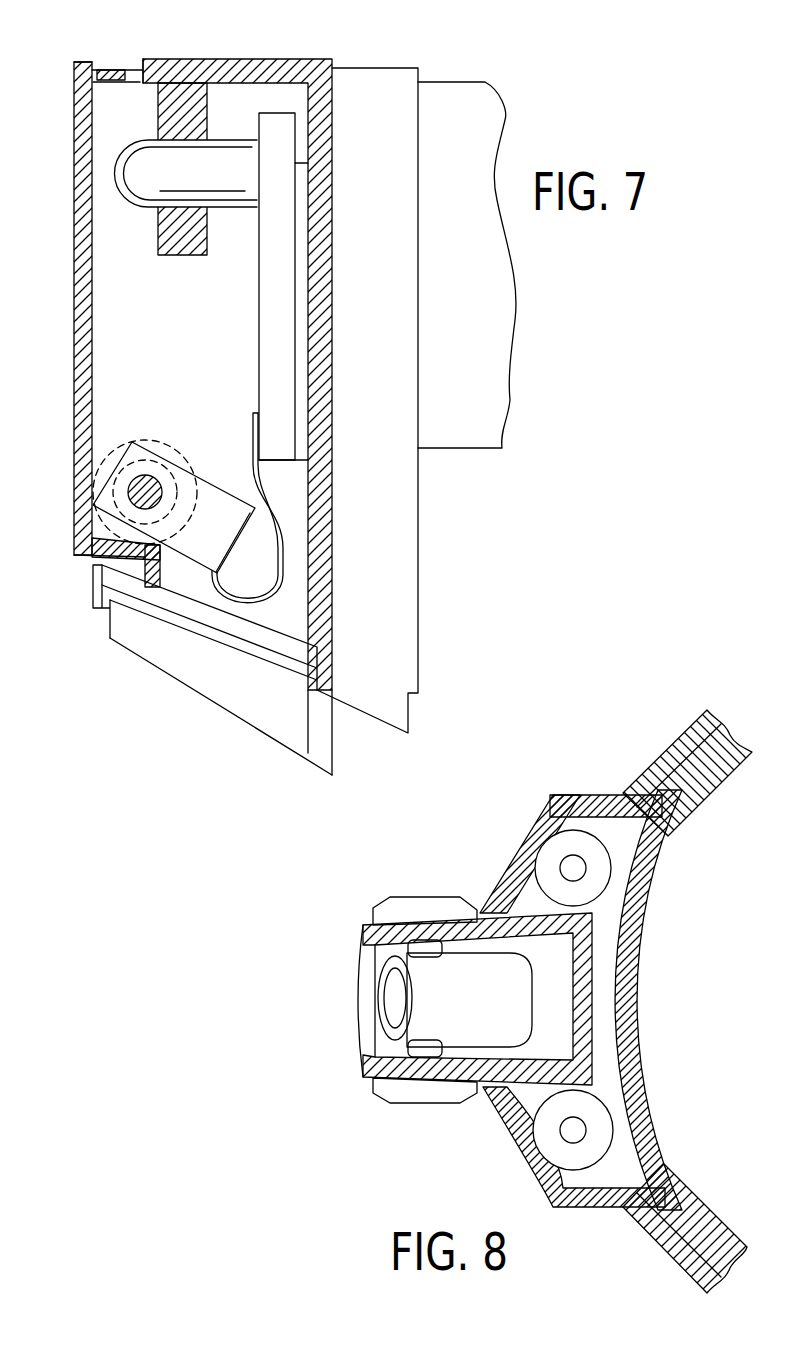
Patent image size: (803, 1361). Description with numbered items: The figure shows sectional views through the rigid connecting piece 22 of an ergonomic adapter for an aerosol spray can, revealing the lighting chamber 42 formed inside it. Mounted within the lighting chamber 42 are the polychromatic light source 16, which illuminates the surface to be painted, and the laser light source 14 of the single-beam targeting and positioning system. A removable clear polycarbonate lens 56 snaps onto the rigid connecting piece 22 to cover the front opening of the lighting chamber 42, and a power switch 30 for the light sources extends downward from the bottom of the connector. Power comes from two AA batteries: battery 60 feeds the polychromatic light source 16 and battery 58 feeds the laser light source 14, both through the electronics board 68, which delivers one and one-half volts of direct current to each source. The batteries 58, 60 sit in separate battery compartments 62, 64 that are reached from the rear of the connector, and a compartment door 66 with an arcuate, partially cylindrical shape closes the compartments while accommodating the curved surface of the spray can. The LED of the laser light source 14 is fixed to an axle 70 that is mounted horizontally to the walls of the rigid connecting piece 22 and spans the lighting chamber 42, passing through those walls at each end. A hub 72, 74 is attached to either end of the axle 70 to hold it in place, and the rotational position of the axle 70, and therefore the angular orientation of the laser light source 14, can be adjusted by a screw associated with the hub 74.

In FIG. 7, the laser light source 14 is at (207, 543).
In FIG. 8, the laser light source 14 is at (482, 1010).
In FIG. 7, the polychromatic light source 16 is at (145, 162).
In FIG. 7, the rigid connecting piece 22 is at (309, 63).
In FIG. 8, the rigid connecting piece 22 is at (556, 797).
In FIG. 7, the power switch 30 is at (253, 700).
In FIG. 7, the lighting chamber 42 is at (167, 351).
In FIG. 7, the clear polycarbonate lens 56 is at (75, 268).
In FIG. 8, the battery 58 is at (600, 1125).
In FIG. 8, the battery 60 is at (600, 868).
In FIG. 8, the battery compartment 62 is at (525, 1103).
In FIG. 8, the battery compartment 64 is at (532, 898).
In FIG. 8, the compartment door 66 is at (622, 1000).
In FIG. 7, the electronics board 68 is at (273, 252).
In FIG. 7, the axle 70 is at (130, 481).
In FIG. 8, the axle 70 is at (420, 952).
In FIG. 8, the hub 72 is at (385, 900).
In FIG. 8, the hub 74 is at (385, 1093).